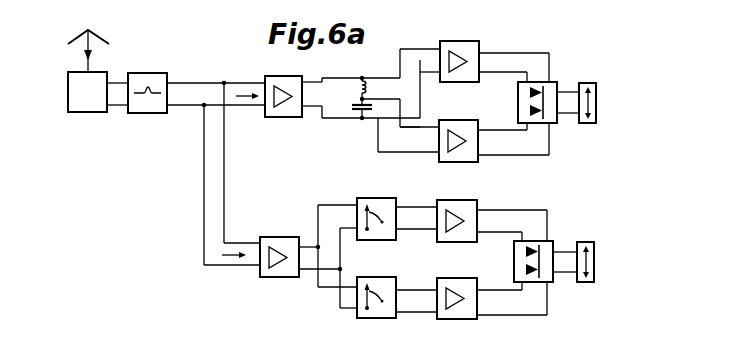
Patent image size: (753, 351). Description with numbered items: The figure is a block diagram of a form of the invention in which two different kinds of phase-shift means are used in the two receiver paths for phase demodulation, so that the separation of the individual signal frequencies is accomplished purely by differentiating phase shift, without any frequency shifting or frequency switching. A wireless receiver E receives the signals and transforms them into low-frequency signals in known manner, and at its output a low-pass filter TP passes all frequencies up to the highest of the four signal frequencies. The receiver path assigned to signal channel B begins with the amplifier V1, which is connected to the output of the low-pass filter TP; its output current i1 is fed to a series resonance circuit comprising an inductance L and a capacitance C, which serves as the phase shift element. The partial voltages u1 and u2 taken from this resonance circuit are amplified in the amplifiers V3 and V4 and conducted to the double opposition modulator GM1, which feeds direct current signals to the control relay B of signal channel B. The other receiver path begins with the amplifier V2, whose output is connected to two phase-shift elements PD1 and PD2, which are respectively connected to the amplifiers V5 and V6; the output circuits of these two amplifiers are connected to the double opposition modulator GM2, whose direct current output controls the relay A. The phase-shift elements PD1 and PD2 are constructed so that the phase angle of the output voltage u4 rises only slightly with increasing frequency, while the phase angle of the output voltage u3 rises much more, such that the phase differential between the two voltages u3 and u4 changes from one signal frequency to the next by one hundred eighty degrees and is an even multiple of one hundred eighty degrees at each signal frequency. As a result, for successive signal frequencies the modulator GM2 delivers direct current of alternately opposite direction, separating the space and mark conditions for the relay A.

The wireless receiver E is at (88, 71).
The low-pass filter TP is at (147, 91).
The amplifier V1 is at (283, 88).
The amplifier V2 is at (279, 248).
The amplifier V3 is at (459, 53).
The amplifier V4 is at (458, 133).
The amplifier V5 is at (457, 212).
The amplifier V6 is at (457, 290).
The output current i1 is at (312, 95).
The inductance L is at (354, 88).
The capacitance C is at (356, 108).
The partial voltage u1 is at (427, 63).
The partial voltage u2 is at (417, 137).
The output voltage u3 is at (416, 218).
The output voltage u4 is at (416, 301).
The phase-shift element PD1 is at (376, 211).
The phase-shift element PD2 is at (376, 289).
The double opposition modulator GM1 is at (523, 102).
The double opposition modulator GM2 is at (519, 261).
The relay A is at (592, 262).
The control relay B is at (594, 103).